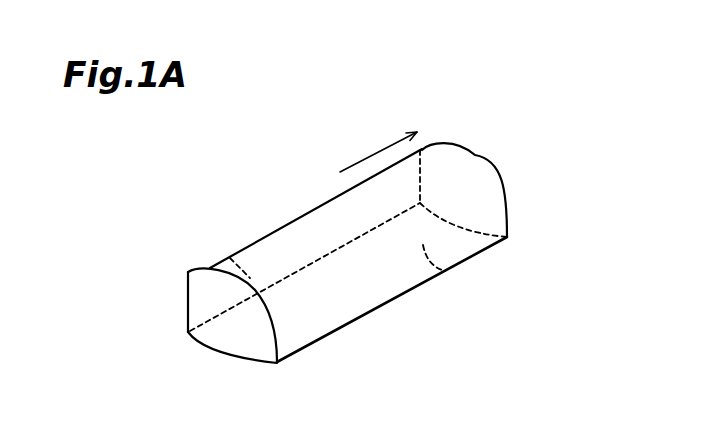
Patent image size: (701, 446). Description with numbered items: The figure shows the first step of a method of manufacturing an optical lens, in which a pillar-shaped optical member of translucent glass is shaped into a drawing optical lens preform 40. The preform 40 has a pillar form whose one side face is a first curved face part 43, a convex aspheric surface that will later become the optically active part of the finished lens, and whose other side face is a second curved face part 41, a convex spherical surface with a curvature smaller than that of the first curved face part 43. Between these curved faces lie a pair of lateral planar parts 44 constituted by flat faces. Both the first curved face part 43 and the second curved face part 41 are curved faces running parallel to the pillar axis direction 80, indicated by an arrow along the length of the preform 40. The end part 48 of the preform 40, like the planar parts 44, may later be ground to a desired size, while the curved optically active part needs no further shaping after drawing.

The drawing optical lens preform 40 is at (368, 254).
The second curved face part 41 is at (447, 272).
The first curved face part 43 is at (315, 217).
The lateral planar parts 44 is at (233, 262).
The end part 48 is at (232, 335).
The pillar axis direction 80 is at (365, 157).